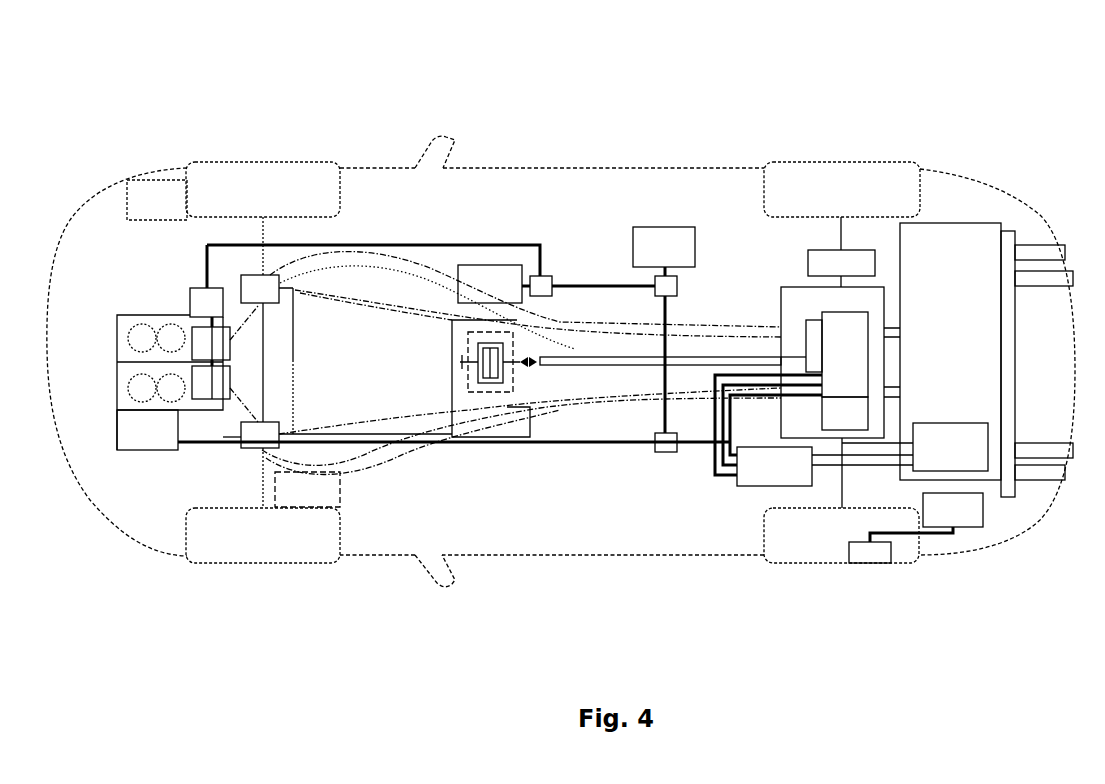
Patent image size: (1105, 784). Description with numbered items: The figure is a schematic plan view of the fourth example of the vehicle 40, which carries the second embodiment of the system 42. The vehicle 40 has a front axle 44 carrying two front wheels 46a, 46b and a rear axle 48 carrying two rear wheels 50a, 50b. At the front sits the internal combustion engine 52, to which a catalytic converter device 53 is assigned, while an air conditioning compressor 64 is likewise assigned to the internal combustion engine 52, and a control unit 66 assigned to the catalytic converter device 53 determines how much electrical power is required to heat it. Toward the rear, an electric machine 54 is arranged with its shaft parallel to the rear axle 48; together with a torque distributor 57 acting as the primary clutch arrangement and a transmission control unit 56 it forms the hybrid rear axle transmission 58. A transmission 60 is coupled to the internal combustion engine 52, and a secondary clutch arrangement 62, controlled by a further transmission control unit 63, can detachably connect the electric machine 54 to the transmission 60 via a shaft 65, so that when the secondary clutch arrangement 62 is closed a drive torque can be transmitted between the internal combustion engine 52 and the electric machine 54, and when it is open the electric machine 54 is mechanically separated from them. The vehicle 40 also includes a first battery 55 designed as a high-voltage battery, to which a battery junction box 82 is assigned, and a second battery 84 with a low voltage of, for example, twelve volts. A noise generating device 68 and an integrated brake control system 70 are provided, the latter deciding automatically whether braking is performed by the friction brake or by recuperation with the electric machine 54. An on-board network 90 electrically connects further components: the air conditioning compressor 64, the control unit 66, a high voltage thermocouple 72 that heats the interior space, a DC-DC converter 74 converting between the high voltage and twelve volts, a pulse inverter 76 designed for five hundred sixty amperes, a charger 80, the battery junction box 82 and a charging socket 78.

The vehicle 40 is at (1046, 124).
The system 42 is at (978, 592).
The front axle 44 is at (245, 481).
The front wheel 46a is at (263, 218).
The front wheel 46b is at (263, 505).
The rear axle 48 is at (820, 493).
The rear wheel 50a is at (842, 206).
The rear wheel 50b is at (841, 500).
The internal combustion engine 52 is at (117, 358).
The catalytic converter device 53 is at (250, 349).
The electric machine 54 is at (845, 354).
The first battery 55 is at (986, 360).
The transmission control unit 56 is at (845, 413).
The torque distributor 57 is at (807, 323).
The hybrid rear axle transmission 58 is at (781, 308).
The transmission 60 is at (448, 378).
The secondary clutch arrangement 62 is at (543, 315).
The further transmission control unit 63 is at (490, 437).
The air conditioning compressor 64 is at (147, 430).
The shaft 65 is at (598, 368).
The control unit 66 is at (207, 300).
The noise generating device 68 is at (157, 200).
The integrated brake control system 70 is at (307, 489).
The high voltage thermocouple 72 is at (431, 274).
The DC-DC converter 74 is at (664, 339).
The pulse inverter 76 is at (545, 430).
The charging socket 78 is at (873, 566).
The charger 80 is at (926, 517).
The battery junction box 82 is at (950, 447).
The second battery 84 is at (825, 265).
The on-board network 90 is at (574, 490).